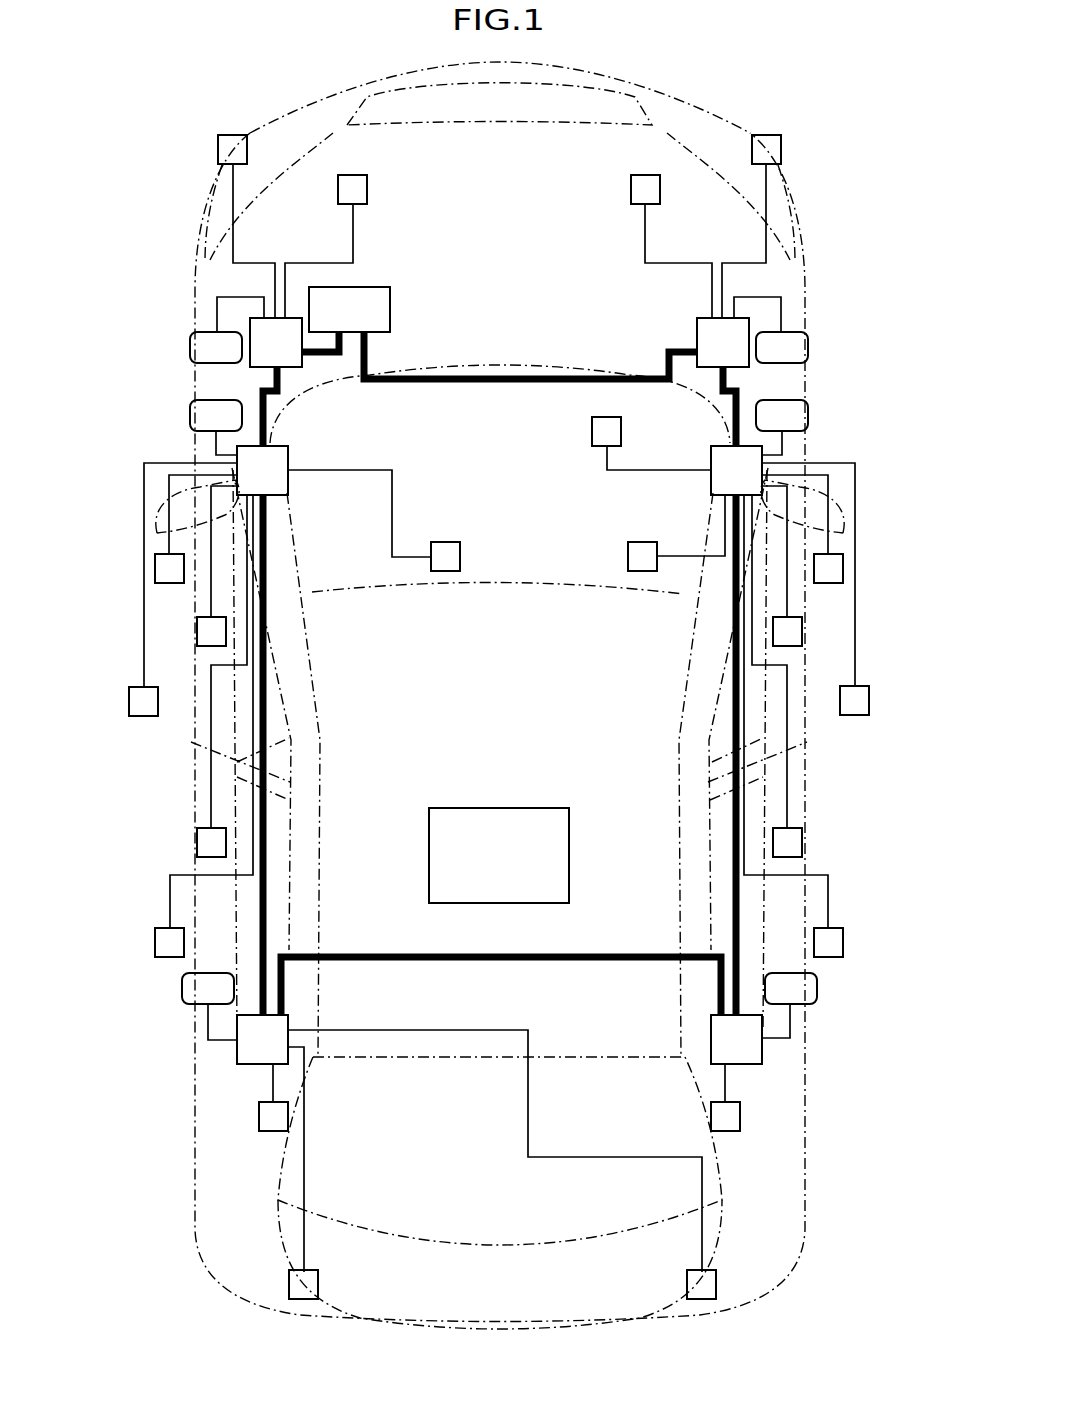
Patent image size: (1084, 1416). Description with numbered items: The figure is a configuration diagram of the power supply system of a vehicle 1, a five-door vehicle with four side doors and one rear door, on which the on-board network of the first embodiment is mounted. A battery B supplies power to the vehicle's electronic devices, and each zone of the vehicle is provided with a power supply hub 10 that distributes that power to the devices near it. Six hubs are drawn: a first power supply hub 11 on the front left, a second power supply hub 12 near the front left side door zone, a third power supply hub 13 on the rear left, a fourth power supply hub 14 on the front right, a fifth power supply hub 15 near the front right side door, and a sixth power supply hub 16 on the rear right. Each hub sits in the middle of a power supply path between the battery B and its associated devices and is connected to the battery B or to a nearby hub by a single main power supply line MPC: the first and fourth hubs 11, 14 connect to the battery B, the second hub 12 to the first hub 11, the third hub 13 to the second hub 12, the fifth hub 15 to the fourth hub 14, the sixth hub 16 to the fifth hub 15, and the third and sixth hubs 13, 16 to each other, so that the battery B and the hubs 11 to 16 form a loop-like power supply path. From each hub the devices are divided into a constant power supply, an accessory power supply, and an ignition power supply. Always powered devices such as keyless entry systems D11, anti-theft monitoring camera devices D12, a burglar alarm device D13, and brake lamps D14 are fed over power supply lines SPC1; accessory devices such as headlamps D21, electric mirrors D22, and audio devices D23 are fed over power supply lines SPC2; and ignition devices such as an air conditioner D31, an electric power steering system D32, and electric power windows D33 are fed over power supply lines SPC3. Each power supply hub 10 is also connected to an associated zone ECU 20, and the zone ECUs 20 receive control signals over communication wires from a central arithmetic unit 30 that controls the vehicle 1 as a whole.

The vehicle 1 is at (250, 99).
The power supply hub 10 is at (579, 674).
The first power supply hub 11 is at (295, 318).
The second power supply hub 12 is at (288, 488).
The third power supply hub 13 is at (288, 1025).
The fourth power supply hub 14 is at (697, 332).
The fifth power supply hub 15 is at (711, 488).
The sixth power supply hub 16 is at (762, 1050).
The zone ECU 20 is at (190, 348).
The central arithmetic unit 30 is at (483, 808).
The battery B is at (390, 312).
The main power supply line MPC is at (262, 385).
The power supply line SPC1 is at (353, 235).
The power supply line SPC2 is at (233, 214).
The power supply line SPC3 is at (615, 470).
The keyless entry system D11 is at (129, 700).
The anti-theft monitoring camera device D12 is at (367, 190).
The burglar alarm device D13 is at (628, 556).
The brake lamp D14 is at (318, 1286).
The headlamp D21 is at (218, 148).
The electric mirror D22 is at (155, 570).
The audio device D23 is at (270, 1133).
The air conditioner D31 is at (460, 557).
The electric power steering system D32 is at (621, 432).
The electric power window D33 is at (197, 632).